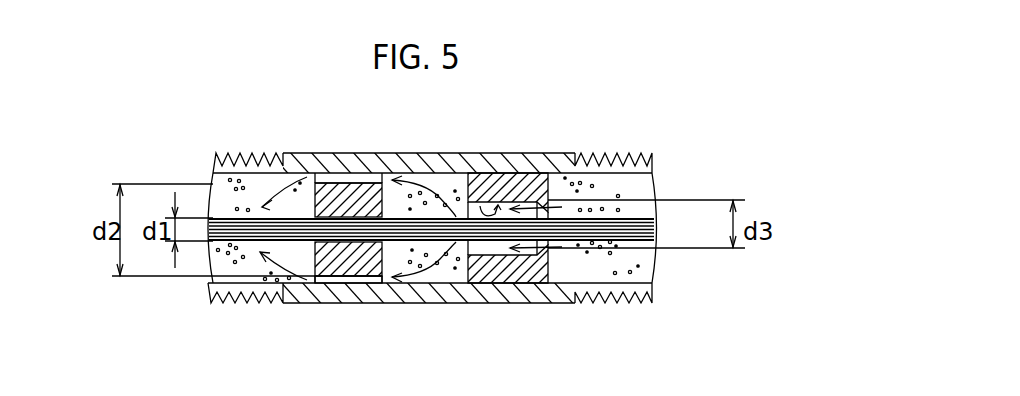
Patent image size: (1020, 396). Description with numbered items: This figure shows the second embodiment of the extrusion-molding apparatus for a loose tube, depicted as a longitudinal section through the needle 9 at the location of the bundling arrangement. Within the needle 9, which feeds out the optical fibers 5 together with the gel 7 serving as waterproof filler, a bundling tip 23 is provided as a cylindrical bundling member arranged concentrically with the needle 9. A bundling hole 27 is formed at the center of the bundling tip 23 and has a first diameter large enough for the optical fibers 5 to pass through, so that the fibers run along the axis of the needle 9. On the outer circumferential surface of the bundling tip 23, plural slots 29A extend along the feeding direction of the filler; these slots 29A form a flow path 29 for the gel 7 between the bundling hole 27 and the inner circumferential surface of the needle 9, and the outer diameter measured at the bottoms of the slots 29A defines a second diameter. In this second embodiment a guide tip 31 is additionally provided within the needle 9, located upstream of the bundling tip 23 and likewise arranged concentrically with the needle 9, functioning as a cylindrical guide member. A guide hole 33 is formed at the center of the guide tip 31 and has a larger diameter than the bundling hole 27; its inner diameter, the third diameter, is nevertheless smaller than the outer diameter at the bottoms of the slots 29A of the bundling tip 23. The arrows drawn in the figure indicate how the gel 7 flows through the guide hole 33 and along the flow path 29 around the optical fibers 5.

The optical fiber 5 is at (637, 237).
The gel 7 is at (447, 285).
The needle 9 is at (442, 152).
The bundling tip 23 is at (382, 180).
The bundling hole 27 is at (313, 285).
The flow path 29 is at (348, 281).
The slot 29A is at (337, 181).
The guide tip 31 is at (532, 183).
The guide hole 33 is at (490, 200).